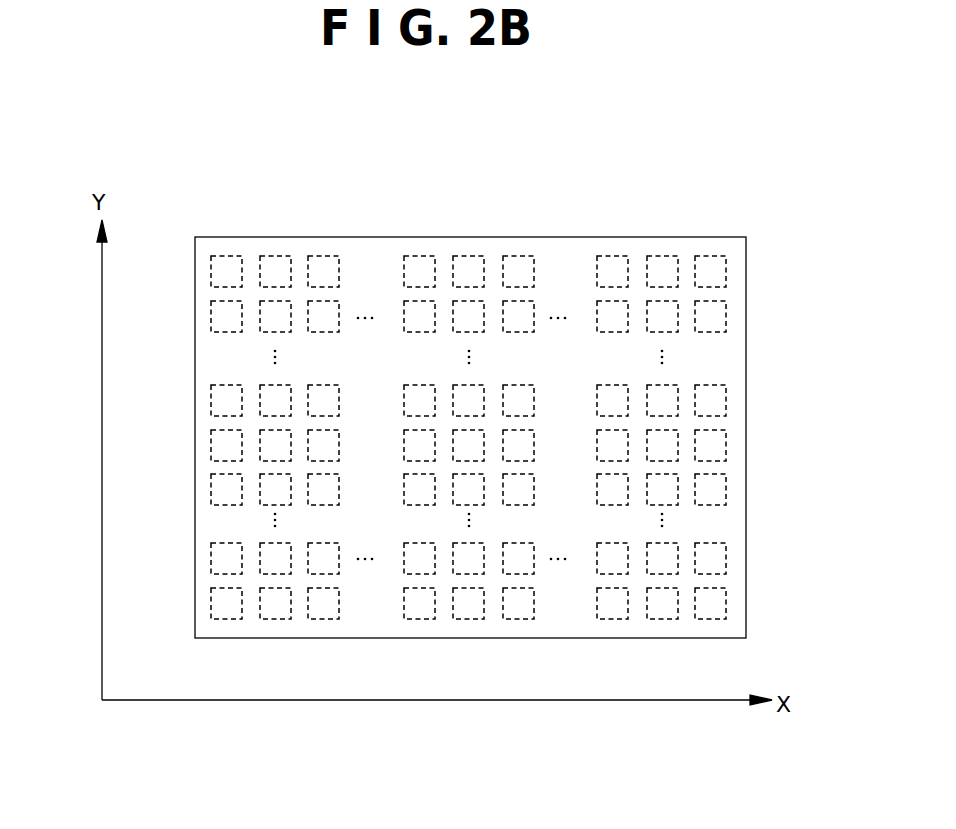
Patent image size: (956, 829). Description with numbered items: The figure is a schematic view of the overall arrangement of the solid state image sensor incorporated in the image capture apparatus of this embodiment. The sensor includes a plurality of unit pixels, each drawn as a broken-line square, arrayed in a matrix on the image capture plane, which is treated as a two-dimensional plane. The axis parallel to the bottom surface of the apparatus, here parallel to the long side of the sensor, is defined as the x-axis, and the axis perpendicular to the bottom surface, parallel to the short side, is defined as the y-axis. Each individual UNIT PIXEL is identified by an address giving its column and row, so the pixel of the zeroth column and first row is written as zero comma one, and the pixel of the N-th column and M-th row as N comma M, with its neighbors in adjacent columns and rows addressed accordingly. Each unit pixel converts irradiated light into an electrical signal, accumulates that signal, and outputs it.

The unit pixel UNIT PIXEL is at (702, 250).